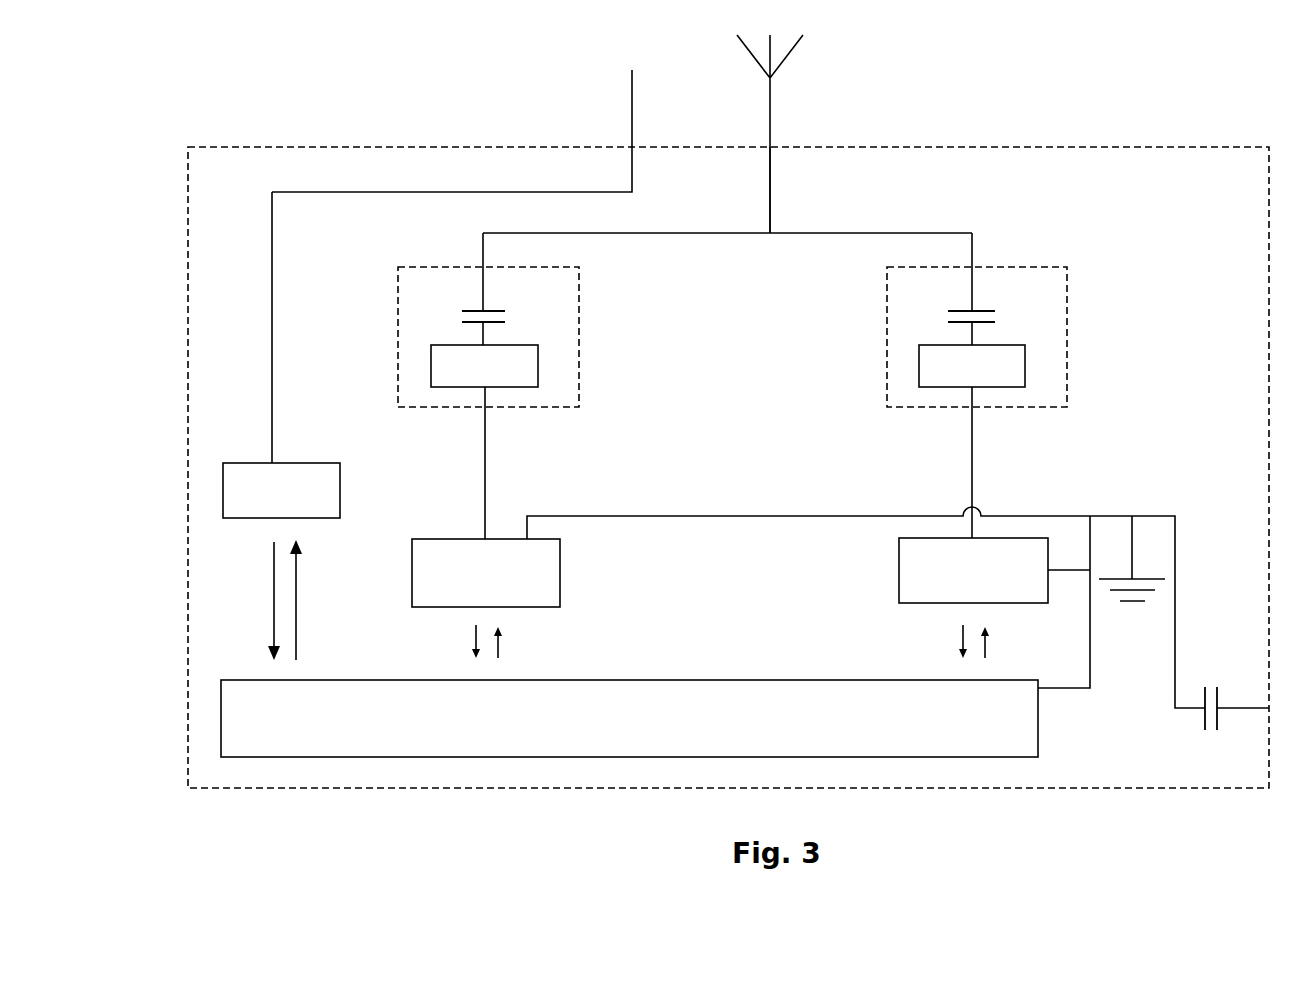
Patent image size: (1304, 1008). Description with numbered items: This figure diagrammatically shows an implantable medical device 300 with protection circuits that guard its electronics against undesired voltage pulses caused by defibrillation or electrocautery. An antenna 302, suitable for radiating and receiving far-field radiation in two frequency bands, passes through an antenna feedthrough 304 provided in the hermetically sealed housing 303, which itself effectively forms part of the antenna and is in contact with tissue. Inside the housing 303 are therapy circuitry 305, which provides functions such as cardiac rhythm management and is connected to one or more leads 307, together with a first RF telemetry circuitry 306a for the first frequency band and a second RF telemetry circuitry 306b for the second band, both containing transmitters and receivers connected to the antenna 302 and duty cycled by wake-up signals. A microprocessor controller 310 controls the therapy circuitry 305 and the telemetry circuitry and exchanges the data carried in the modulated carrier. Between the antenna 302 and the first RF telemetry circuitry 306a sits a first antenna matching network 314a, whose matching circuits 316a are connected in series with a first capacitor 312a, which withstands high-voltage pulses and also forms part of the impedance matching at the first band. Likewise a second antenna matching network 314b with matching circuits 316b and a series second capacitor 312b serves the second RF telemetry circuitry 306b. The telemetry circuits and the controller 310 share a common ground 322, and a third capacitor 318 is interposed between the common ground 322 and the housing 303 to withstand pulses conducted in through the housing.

The implantable medical device 300 is at (1092, 101).
The antenna 302 is at (767, 79).
The housing 303 is at (410, 147).
The antenna feedthrough 304 is at (773, 147).
The therapy circuitry 305 is at (223, 484).
The first RF telemetry circuitry 306a is at (412, 578).
The second RF telemetry circuitry 306b is at (899, 566).
The leads 307 is at (272, 312).
The microprocessor controller 310 is at (702, 680).
The first capacitor 312a is at (495, 308).
The second capacitor 312b is at (980, 308).
The first antenna matching network 314a is at (398, 357).
The second antenna matching network 314b is at (887, 357).
The matching circuits 316a is at (538, 360).
The matching circuits 316b is at (1025, 352).
The third capacitor 318 is at (1208, 697).
The common ground 322 is at (1140, 602).